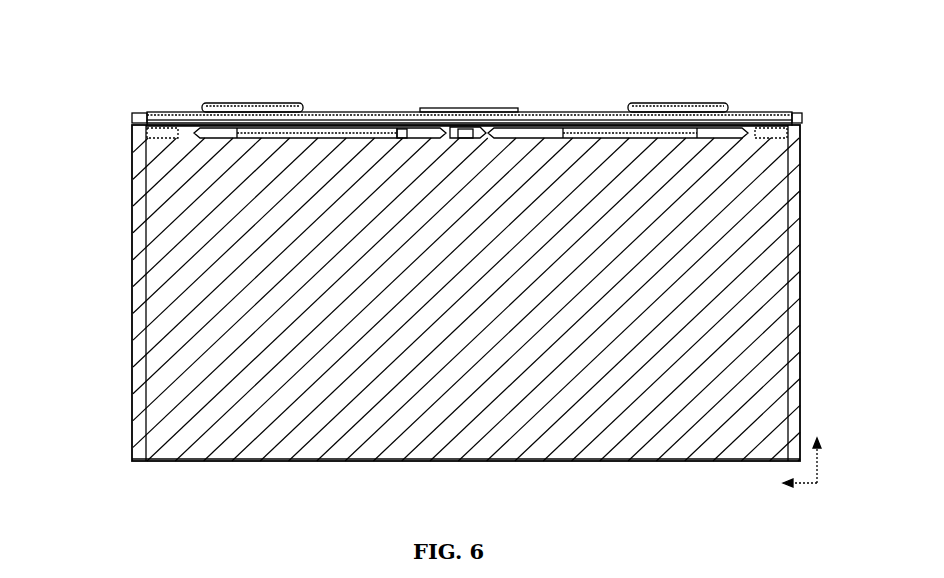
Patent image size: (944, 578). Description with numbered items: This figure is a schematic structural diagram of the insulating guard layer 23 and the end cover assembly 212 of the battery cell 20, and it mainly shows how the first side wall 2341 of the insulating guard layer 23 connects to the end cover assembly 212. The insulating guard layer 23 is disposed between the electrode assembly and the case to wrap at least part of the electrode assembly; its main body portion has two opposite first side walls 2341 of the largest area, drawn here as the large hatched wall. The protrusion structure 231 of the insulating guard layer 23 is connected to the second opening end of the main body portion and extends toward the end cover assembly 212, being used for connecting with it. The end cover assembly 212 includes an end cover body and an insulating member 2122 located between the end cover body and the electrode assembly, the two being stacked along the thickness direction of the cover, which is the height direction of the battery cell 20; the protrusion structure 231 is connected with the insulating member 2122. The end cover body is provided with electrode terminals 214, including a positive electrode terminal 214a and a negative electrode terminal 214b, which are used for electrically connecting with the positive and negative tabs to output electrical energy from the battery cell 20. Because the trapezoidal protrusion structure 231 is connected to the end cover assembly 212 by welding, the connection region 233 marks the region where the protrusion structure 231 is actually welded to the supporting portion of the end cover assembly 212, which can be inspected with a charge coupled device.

The battery cell 20 is at (182, 43).
The end cover assembly 212 is at (412, 134).
The insulating member 2122 is at (132, 116).
The electrode terminal 214 is at (465, 72).
The positive electrode terminal 214a is at (277, 103).
The negative electrode terminal 214b is at (639, 93).
The protrusion structure 231 is at (188, 135).
The connection region 233 is at (148, 128).
The insulating guard layer 23 is at (505, 293).
The first side wall 2341 is at (763, 278).